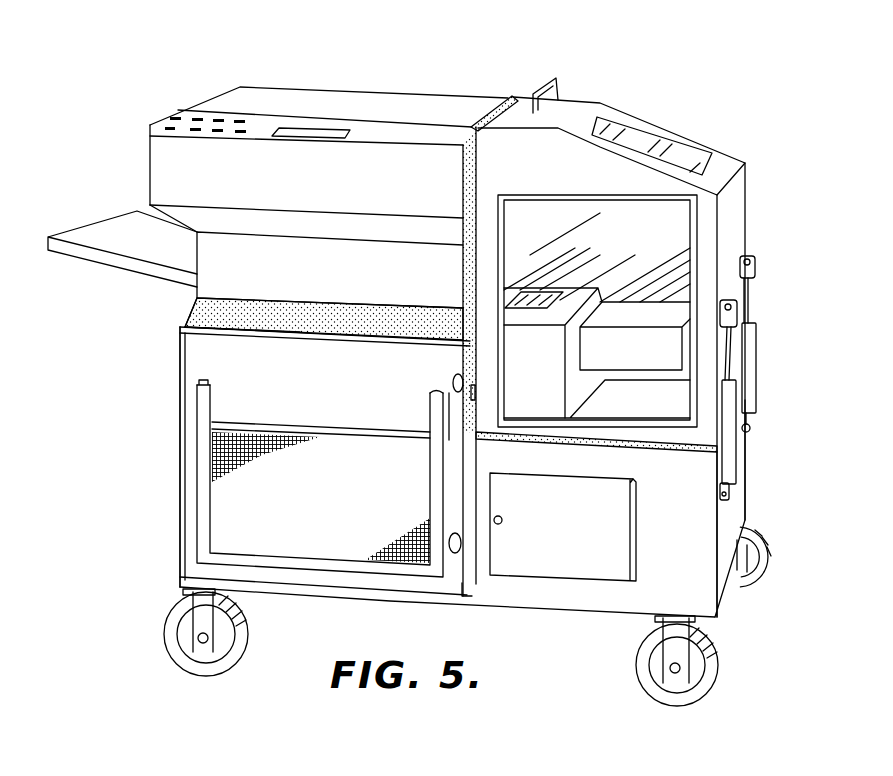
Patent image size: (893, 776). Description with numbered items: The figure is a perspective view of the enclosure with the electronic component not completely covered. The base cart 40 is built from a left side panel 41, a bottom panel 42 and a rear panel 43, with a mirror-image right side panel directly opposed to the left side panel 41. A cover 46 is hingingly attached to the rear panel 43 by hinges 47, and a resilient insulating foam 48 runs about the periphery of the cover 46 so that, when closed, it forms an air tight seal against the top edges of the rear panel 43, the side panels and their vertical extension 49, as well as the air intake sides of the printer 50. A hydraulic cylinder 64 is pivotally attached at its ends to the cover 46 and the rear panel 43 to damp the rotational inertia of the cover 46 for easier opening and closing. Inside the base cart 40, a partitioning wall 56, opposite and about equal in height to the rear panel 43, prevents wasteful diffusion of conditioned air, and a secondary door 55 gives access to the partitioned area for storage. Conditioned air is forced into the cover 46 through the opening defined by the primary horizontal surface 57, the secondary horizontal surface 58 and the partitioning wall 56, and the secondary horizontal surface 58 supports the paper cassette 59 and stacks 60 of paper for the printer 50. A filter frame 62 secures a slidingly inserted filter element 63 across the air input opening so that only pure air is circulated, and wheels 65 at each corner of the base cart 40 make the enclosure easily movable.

The base cart 40 is at (423, 644).
The left side panel 41 is at (207, 366).
The bottom panel 42 is at (630, 617).
The rear panel 43 is at (728, 510).
The cover 46 is at (735, 210).
The hinges 47 is at (732, 462).
The resilient insulating foam 48 is at (510, 97).
The vertical extension 49 is at (470, 457).
The printer 50 is at (375, 102).
The secondary door 55 is at (617, 572).
The partitioning wall 56 is at (460, 582).
The primary horizontal surface 57 is at (208, 333).
The secondary horizontal surface 58 is at (677, 410).
The paper cassette 59 is at (596, 268).
The stacks of paper 60 is at (593, 357).
The filter frame 62 is at (205, 455).
The filter element 63 is at (235, 512).
The hydraulic cylinder 64 is at (748, 357).
The wheels 65 is at (168, 628).